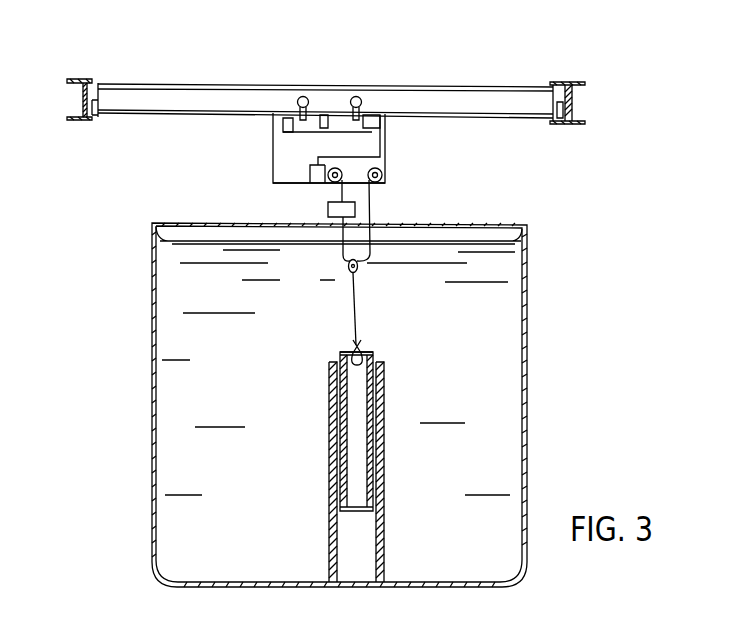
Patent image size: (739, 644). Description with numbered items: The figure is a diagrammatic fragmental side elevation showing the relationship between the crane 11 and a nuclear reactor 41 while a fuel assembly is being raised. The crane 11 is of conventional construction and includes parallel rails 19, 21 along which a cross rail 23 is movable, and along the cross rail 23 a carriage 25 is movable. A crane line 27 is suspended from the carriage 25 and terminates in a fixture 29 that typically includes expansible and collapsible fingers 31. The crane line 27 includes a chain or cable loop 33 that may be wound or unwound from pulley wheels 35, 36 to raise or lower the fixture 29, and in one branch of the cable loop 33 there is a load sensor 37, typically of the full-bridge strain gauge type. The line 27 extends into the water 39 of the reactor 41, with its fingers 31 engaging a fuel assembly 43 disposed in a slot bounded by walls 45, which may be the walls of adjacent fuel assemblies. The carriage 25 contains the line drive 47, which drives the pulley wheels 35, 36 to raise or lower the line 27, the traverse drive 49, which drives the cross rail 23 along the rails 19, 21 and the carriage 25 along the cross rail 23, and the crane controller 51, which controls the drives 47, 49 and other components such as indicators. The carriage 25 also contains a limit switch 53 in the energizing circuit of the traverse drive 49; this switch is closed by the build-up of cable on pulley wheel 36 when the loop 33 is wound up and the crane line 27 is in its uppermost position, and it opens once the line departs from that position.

The crane 11 is at (535, 163).
The parallel rail 19 is at (577, 80).
The parallel rail 21 is at (83, 78).
The cross rail 23 is at (181, 83).
The carriage 25 is at (284, 124).
The crane line 27 is at (357, 308).
The fixture 29 is at (363, 349).
The fingers 31 is at (350, 364).
The cable loop 33 is at (372, 207).
The pulley wheel 35 is at (383, 176).
The pulley wheel 36 is at (332, 183).
The load sensor 37 is at (328, 209).
The water 39 is at (200, 345).
The reactor 41 is at (153, 303).
The fuel assembly 43 is at (355, 484).
The walls 45 is at (378, 518).
The line drive 47 is at (328, 120).
The traverse drive 49 is at (375, 122).
The crane controller 51 is at (273, 140).
The limit switch 53 is at (303, 185).